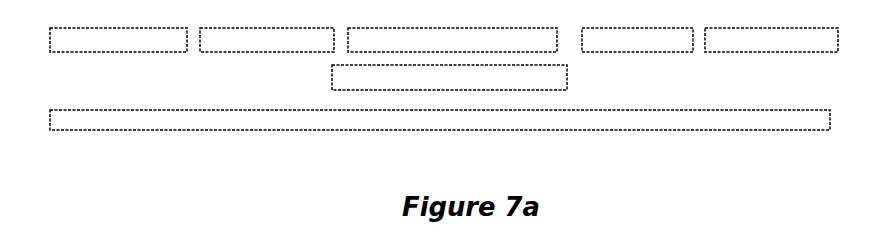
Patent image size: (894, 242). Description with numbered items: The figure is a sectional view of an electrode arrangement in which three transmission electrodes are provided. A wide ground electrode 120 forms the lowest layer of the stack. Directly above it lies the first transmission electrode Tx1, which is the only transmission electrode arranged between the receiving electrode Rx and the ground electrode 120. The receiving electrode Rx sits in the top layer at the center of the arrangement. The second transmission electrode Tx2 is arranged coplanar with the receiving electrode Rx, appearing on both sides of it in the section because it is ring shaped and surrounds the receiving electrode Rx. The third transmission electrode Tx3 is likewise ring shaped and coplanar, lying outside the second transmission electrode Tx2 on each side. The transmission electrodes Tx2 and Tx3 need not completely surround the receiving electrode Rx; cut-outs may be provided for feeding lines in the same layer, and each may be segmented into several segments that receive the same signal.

The ground electrode 120 is at (822, 117).
The first transmission electrode Tx1 is at (449, 77).
The second transmission electrode Tx2 is at (446, 40).
The third transmission electrode Tx3 is at (444, 40).
The receiving electrode Rx is at (452, 40).